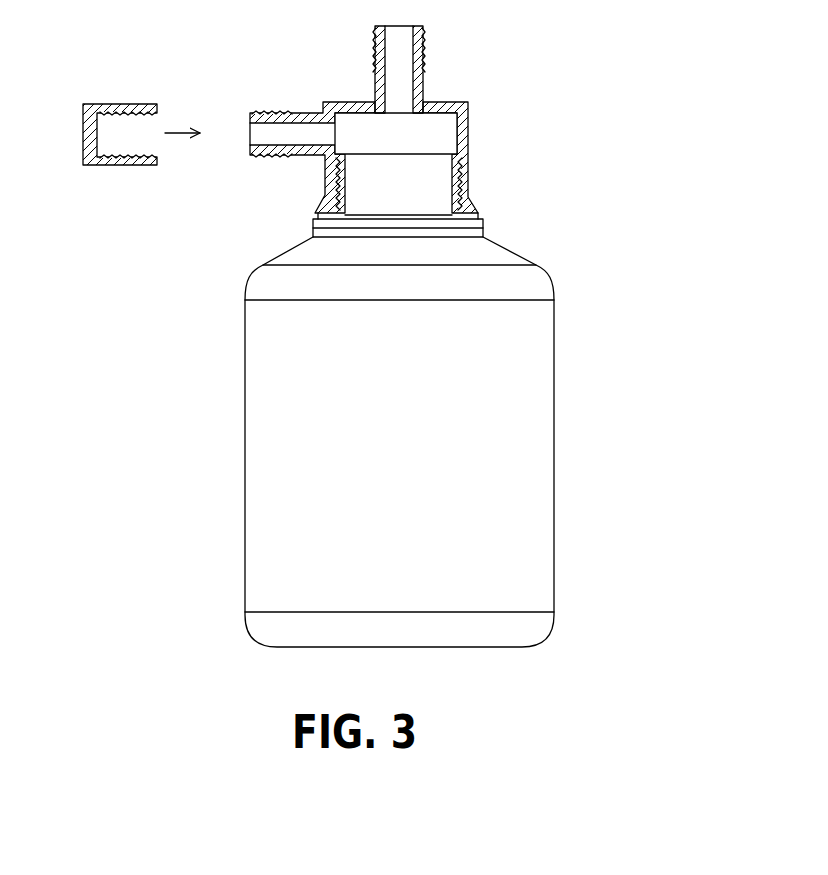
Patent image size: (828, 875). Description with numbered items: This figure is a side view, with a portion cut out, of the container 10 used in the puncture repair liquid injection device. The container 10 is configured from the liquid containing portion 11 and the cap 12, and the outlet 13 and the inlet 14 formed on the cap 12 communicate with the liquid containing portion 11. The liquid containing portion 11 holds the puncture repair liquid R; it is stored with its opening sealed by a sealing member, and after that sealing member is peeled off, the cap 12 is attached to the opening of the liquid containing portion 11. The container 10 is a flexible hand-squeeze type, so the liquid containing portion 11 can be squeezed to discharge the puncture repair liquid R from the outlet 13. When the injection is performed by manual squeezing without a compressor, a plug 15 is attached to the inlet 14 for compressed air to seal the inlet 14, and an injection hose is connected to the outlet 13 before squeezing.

The container 10 is at (550, 188).
The liquid containing portion 11 is at (538, 512).
The cap 12 is at (468, 130).
The outlet 13 is at (422, 60).
The inlet 14 is at (290, 110).
The plug 15 is at (130, 104).
The puncture repair liquid R is at (477, 385).